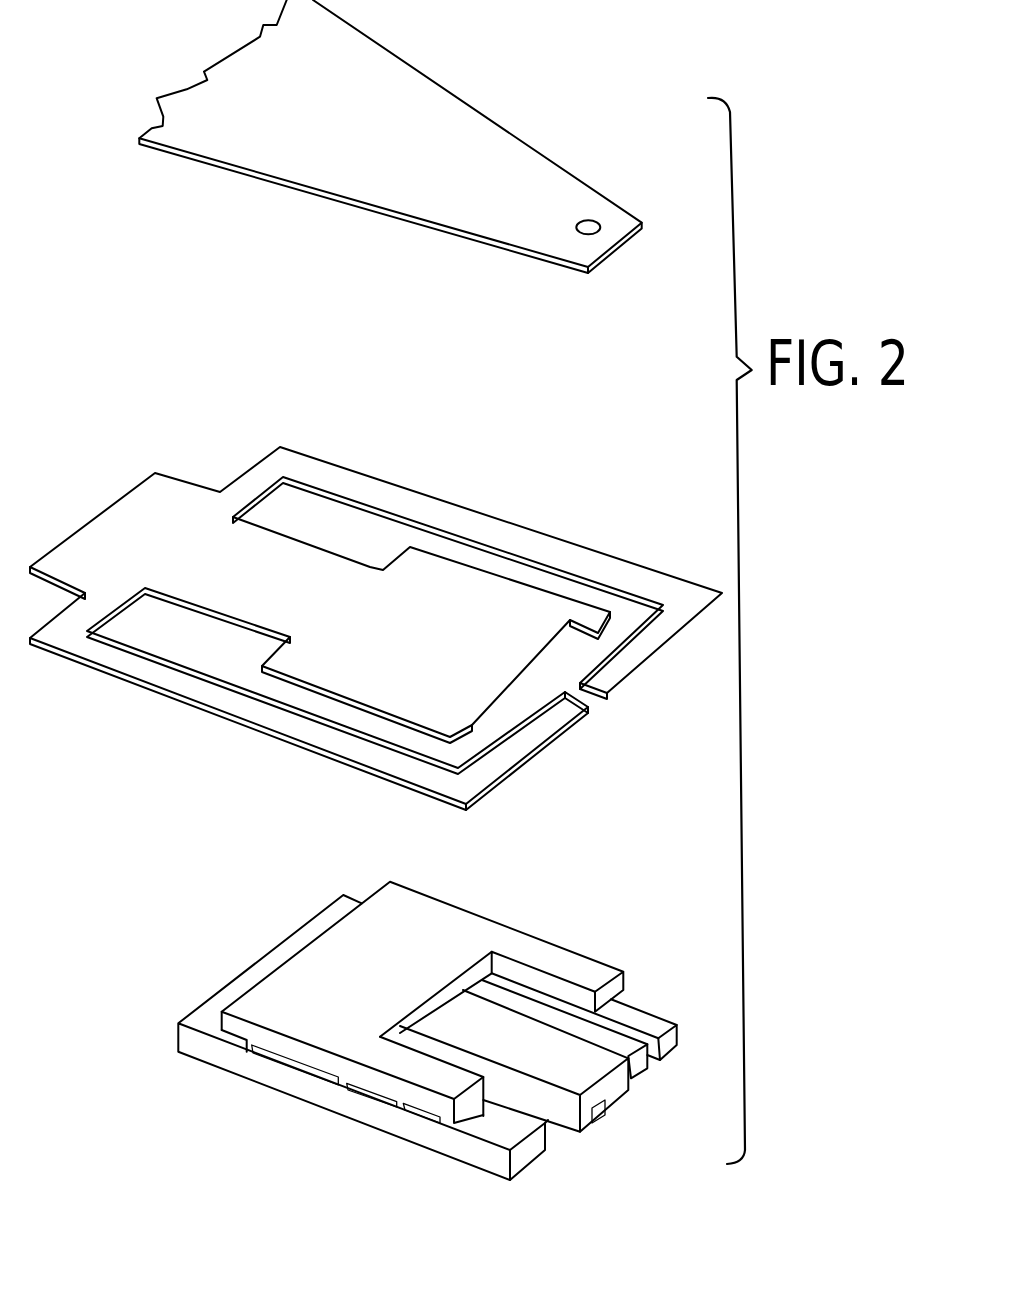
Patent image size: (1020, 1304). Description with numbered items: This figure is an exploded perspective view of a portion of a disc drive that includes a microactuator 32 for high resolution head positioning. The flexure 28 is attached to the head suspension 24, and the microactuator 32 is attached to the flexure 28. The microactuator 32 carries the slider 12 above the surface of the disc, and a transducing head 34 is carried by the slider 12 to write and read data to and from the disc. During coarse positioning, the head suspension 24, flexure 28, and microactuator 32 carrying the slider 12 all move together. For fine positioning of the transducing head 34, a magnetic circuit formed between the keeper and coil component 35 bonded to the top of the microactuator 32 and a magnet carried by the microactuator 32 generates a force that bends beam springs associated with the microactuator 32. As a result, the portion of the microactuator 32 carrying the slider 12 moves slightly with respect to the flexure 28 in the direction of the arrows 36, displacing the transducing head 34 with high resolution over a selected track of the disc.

The head suspension 24 is at (470, 118).
The flexure 28 is at (478, 510).
The microactuator 32 is at (236, 969).
The keeper and coil component 35 is at (447, 930).
The slider 12 is at (615, 1090).
The transducing head 34 is at (605, 1124).
The arrows 36 is at (687, 1107).